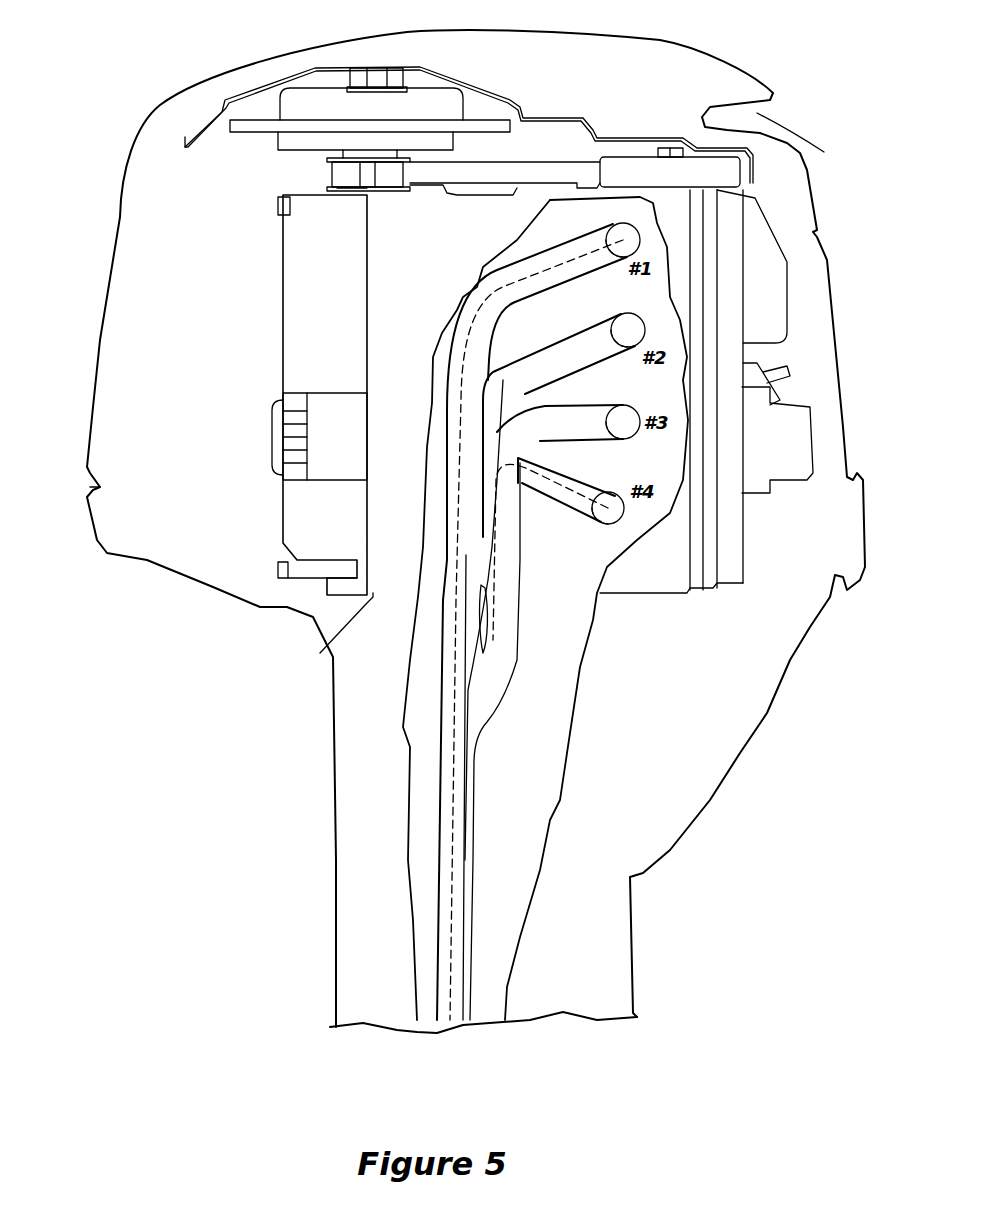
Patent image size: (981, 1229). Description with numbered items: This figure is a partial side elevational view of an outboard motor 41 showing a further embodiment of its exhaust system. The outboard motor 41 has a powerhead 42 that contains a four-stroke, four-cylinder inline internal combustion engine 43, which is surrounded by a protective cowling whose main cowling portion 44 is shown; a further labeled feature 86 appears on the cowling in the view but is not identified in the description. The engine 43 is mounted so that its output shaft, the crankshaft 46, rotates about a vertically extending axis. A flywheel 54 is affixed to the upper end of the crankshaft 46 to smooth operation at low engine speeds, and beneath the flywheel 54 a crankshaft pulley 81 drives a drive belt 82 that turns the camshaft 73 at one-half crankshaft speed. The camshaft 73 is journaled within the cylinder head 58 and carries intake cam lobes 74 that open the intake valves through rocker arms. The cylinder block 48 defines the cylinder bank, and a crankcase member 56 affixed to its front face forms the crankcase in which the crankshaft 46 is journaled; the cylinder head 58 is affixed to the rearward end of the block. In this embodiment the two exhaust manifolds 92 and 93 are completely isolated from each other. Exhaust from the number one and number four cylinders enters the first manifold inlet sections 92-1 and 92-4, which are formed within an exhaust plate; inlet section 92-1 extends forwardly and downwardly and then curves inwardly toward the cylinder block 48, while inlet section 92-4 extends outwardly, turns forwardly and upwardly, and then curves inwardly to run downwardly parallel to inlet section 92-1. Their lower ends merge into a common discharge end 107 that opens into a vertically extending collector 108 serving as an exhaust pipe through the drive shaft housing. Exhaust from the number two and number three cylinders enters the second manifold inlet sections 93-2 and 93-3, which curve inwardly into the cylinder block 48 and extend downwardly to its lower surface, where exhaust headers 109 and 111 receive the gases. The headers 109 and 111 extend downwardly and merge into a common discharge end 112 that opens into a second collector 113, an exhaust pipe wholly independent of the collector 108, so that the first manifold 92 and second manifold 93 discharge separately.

The outboard motor 41 is at (787, 105).
The powerhead 42 is at (137, 52).
The internal combustion engine 43 is at (233, 250).
The main cowling portion 44 is at (847, 433).
The crankshaft 46 is at (340, 160).
The cylinder block 48 is at (323, 638).
The flywheel 54 is at (466, 108).
The crankcase member 56 is at (283, 371).
The cylinder head 58 is at (673, 593).
The camshaft 73 is at (683, 185).
The intake cam lobes 74 is at (621, 163).
The crankshaft pulley 81 is at (386, 183).
The drive belt 82 is at (500, 177).
The cowling seam 86 is at (807, 147).
The first exhaust manifold 92 is at (443, 563).
The first exhaust manifold inlet section 92-1 is at (513, 320).
The first exhaust manifold inlet section 92-4 is at (567, 500).
The second exhaust manifold 93 is at (443, 650).
The second exhaust manifold inlet section 93-2 is at (550, 357).
The second exhaust manifold inlet section 93-3 is at (583, 423).
The common discharge end 107 is at (480, 560).
The collector 108 is at (440, 858).
The exhaust header 109 is at (487, 625).
The exhaust header 111 is at (517, 657).
The common discharge end 112 is at (500, 707).
The second collector 113 is at (473, 878).